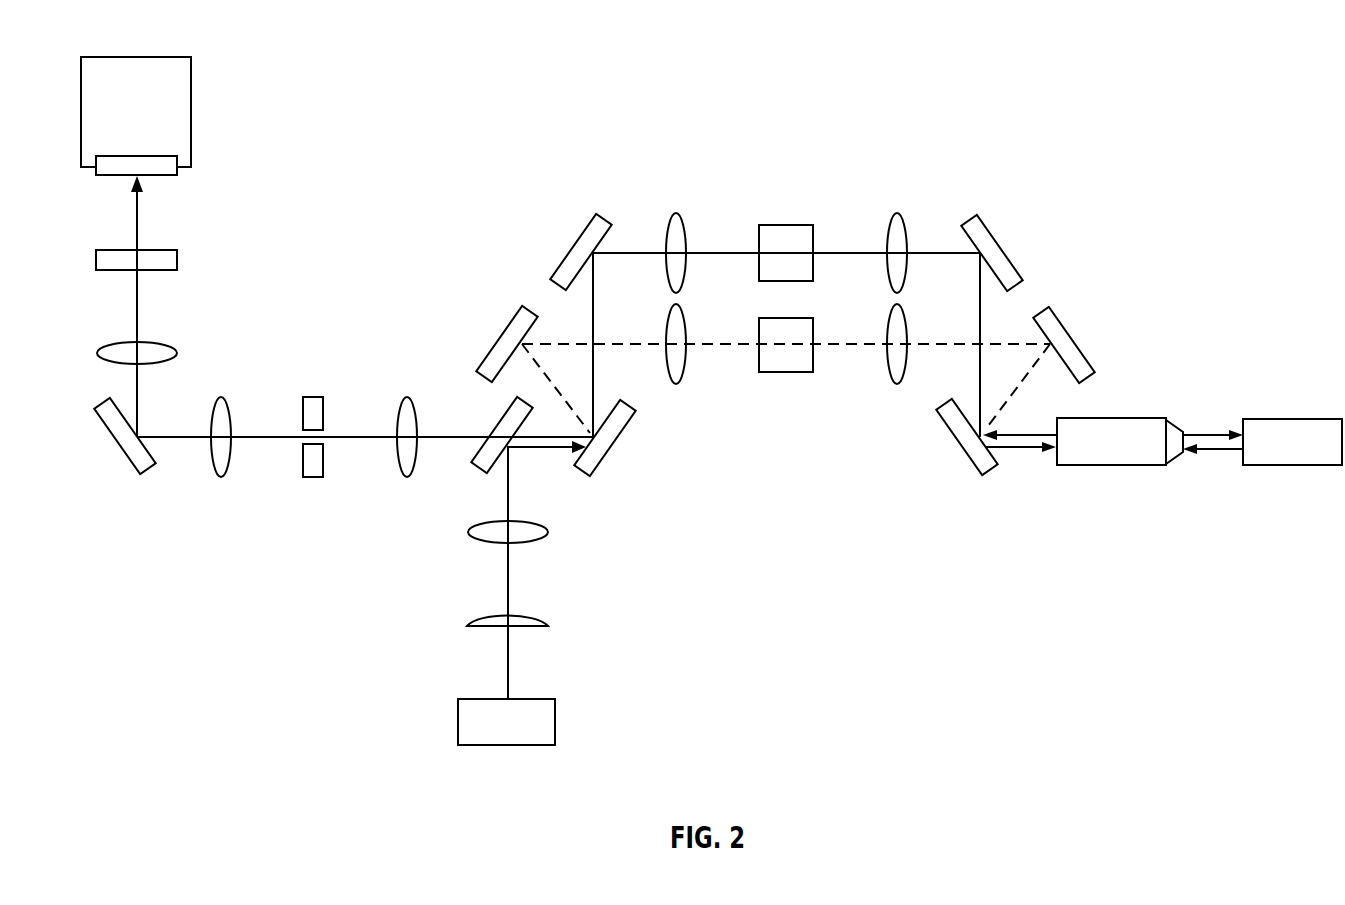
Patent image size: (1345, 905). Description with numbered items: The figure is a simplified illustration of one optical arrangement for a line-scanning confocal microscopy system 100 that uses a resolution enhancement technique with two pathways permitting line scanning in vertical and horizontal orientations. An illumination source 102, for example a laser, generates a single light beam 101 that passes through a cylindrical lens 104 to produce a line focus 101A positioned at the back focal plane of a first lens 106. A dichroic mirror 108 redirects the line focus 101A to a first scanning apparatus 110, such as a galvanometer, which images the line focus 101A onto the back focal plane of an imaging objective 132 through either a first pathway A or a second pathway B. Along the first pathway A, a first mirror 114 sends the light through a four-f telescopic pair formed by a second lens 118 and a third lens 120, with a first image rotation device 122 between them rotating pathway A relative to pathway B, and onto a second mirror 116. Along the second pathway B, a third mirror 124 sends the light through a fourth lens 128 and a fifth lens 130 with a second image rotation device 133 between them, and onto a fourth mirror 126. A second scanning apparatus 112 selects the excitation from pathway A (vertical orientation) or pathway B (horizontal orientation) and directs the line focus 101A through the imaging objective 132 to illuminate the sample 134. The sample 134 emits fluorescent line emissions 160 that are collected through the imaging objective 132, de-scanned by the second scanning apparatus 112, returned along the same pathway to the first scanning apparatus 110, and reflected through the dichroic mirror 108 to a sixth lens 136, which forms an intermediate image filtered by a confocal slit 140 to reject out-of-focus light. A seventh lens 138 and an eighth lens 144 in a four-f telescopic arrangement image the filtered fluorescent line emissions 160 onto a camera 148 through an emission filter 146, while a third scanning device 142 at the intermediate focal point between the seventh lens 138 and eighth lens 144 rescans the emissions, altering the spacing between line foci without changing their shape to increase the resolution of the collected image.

The line-scanning confocal microscopy system 100 is at (1127, 87).
The single light beam 101 is at (507, 668).
The line focus 101A is at (507, 597).
The illumination source 102 is at (555, 722).
The cylindrical lens 104 is at (548, 625).
The first lens 106 is at (548, 532).
The dichroic mirror 108 is at (503, 407).
The first scanning apparatus 110 is at (600, 465).
The second scanning apparatus 112 is at (975, 470).
The first mirror 114 is at (497, 335).
The second mirror 116 is at (1075, 337).
The second lens 118 is at (676, 384).
The third lens 120 is at (897, 384).
The first image rotation device 122 is at (786, 372).
The third mirror 124 is at (573, 243).
The fourth mirror 126 is at (1002, 248).
The fourth lens 128 is at (676, 213).
The fifth lens 130 is at (897, 213).
The imaging objective 132 is at (1100, 465).
The second image rotation device 133 is at (786, 225).
The sample 134 is at (1277, 465).
The sixth lens 136 is at (407, 477).
The seventh lens 138 is at (220, 477).
The confocal slit 140 is at (313, 478).
The third scanning device 142 is at (118, 450).
The eighth lens 144 is at (177, 354).
The emission filter 146 is at (177, 258).
The camera 148 is at (195, 112).
The fluorescent line emissions 160 is at (137, 220).
The first pathway A is at (560, 392).
The second pathway B is at (593, 290).